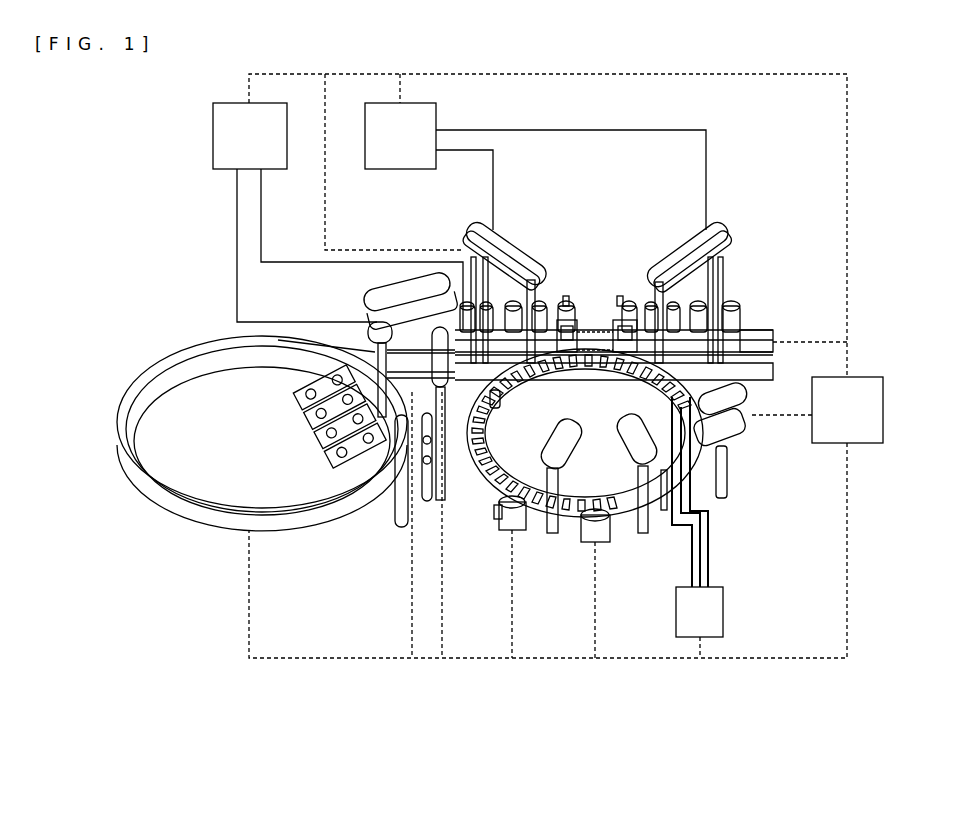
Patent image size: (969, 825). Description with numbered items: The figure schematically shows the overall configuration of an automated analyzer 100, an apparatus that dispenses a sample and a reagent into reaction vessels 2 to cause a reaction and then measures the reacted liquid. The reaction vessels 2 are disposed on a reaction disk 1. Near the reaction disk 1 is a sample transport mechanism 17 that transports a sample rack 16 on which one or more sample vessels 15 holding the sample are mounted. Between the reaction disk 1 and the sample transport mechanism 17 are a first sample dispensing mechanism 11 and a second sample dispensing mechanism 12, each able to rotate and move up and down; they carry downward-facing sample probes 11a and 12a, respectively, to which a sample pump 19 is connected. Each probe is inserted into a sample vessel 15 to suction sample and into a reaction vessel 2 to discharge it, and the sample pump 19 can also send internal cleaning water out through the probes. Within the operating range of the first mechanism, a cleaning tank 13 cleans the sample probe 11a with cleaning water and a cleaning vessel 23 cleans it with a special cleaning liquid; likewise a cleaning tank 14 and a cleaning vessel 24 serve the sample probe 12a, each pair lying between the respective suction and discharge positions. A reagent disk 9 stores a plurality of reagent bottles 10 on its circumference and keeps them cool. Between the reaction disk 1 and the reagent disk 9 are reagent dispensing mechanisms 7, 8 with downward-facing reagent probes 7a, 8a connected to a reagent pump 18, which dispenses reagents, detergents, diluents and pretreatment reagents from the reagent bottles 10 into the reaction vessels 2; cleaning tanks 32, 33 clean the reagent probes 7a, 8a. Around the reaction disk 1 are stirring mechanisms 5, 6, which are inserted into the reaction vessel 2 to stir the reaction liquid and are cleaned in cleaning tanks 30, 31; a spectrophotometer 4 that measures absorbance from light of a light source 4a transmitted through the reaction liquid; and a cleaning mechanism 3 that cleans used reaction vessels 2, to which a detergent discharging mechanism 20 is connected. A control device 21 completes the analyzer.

The automated analyzer 100 is at (210, 723).
The reaction disk 1 is at (480, 483).
The reaction vessel 2 is at (499, 520).
The cleaning mechanism 3 is at (740, 440).
The spectrophotometer 4 is at (745, 400).
The light source 4a is at (660, 520).
The stirring mechanism 5 is at (552, 542).
The stirring mechanism 6 is at (643, 540).
The reagent dispensing mechanism 7 is at (443, 490).
The reagent probe 7a is at (494, 398).
The reagent dispensing mechanism 8 is at (366, 294).
The reagent probe 8a is at (278, 340).
The reagent disk 9 is at (198, 522).
The reagent bottle 10 is at (337, 462).
The first sample dispensing mechanism 11 is at (507, 226).
The sample probe 11a is at (554, 301).
The second sample dispensing mechanism 12 is at (725, 222).
The sample probe 12a is at (640, 298).
The cleaning tank 13 is at (563, 373).
The cleaning tank 14 is at (617, 373).
The sample vessel 15 is at (745, 318).
The sample rack 16 is at (744, 345).
The sample transport mechanism 17 is at (769, 372).
The reagent pump 18 is at (213, 120).
The sample pump 19 is at (385, 169).
The detergent discharging mechanism 20 is at (723, 610).
The control device 21 is at (868, 377).
The cleaning vessel 23 is at (567, 300).
The cleaning vessel 24 is at (620, 298).
The cleaning tank 30 is at (522, 535).
The cleaning tank 31 is at (605, 545).
The cleaning tank 32 is at (403, 501).
The cleaning tank 33 is at (433, 499).